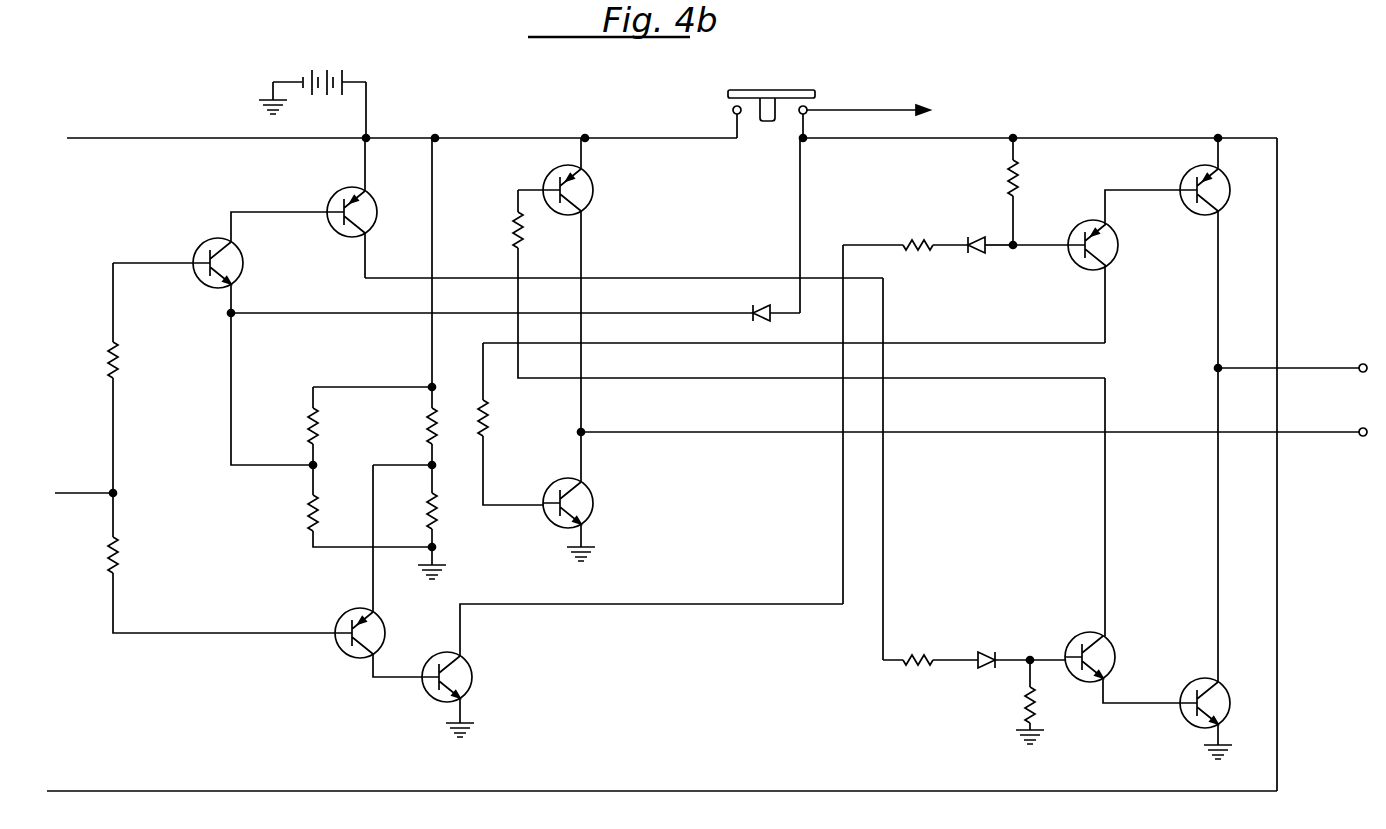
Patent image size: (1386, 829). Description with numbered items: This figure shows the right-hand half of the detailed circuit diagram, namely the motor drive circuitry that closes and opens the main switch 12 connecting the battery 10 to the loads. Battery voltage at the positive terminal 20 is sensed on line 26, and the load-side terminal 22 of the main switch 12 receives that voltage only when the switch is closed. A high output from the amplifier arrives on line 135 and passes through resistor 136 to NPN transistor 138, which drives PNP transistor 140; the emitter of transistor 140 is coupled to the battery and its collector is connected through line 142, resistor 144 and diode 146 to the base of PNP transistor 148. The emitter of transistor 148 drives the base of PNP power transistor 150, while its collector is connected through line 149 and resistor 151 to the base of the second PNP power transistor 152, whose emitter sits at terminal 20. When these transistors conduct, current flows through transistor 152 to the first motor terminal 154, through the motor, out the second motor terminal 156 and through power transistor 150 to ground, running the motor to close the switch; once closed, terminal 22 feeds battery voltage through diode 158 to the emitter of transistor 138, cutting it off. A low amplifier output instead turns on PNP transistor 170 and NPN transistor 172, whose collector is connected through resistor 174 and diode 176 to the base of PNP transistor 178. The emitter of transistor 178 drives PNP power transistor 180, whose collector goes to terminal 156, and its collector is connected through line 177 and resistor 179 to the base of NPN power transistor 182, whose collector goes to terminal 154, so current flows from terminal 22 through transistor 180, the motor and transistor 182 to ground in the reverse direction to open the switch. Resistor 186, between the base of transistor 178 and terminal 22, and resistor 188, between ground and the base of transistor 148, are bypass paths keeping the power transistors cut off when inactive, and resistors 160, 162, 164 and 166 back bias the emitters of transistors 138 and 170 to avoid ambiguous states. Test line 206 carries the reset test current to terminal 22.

The battery 10 is at (338, 60).
The main switch 12 is at (750, 85).
The positive terminal 20 is at (733, 110).
The terminal 22 is at (808, 112).
The line 26 is at (158, 138).
The line 135 is at (80, 493).
The resistor 136 is at (110, 350).
The NPN transistor 138 is at (205, 242).
The PNP transistor 140 is at (338, 190).
The line 142 is at (665, 278).
The resistor 144 is at (915, 668).
The diode 146 is at (985, 652).
The PNP transistor 148 is at (1075, 638).
The line 149 is at (518, 258).
The PNP power transistor 150 is at (1190, 688).
The resistor 151 is at (518, 210).
The second PNP power transistor 152 is at (590, 180).
The first motor terminal 154 is at (1360, 438).
The second motor terminal 156 is at (1360, 362).
The diode 158 is at (760, 310).
The resistor 160 is at (310, 420).
The resistor 162 is at (308, 500).
The resistor 164 is at (428, 422).
The resistor 166 is at (437, 515).
The PNP transistor 170 is at (343, 650).
The NPN transistor 172 is at (475, 675).
The resistor 174 is at (915, 245).
The diode 176 is at (975, 255).
The line 177 is at (972, 343).
The PNP transistor 178 is at (1080, 265).
The resistor 179 is at (490, 412).
The PNP power transistor 180 is at (1192, 212).
The NPN power transistor 182 is at (553, 482).
The resistor 186 is at (1010, 183).
The resistor 188 is at (1025, 700).
The test line 206 is at (200, 791).